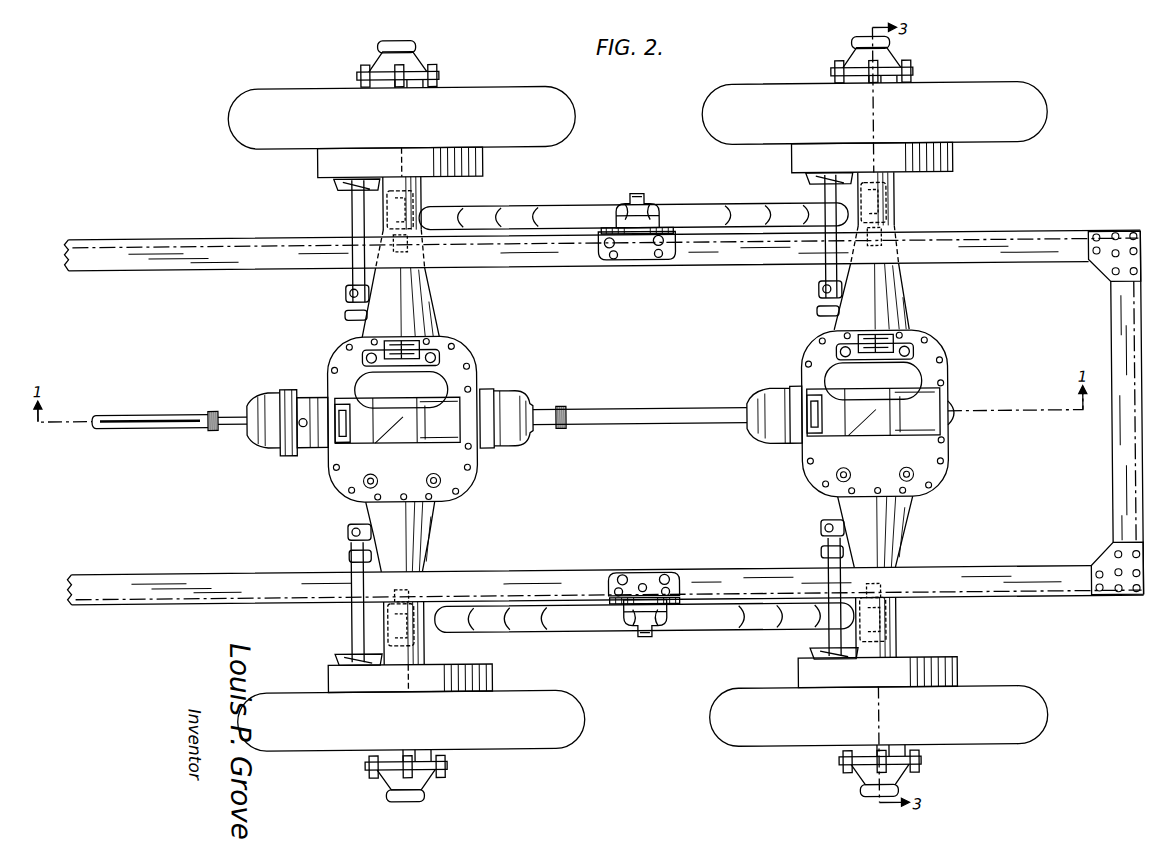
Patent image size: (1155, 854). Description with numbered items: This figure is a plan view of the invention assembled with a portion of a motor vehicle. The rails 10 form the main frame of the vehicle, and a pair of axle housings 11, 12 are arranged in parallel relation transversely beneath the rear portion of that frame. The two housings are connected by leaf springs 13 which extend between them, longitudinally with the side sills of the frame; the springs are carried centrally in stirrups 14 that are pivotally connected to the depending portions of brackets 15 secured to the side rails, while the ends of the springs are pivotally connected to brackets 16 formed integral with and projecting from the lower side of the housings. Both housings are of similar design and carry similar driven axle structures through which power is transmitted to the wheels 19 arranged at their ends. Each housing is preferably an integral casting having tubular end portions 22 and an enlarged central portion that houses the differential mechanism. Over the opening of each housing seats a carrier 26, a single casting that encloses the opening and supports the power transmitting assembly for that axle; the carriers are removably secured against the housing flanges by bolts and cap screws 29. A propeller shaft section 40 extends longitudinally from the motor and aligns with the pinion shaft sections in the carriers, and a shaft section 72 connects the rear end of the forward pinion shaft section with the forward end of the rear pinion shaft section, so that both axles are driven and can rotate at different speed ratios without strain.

The rails 10 is at (1023, 253).
The axle housing 11 is at (913, 517).
The axle housing 12 is at (437, 315).
The leaf springs 13 is at (705, 213).
The stirrups 14 is at (650, 197).
The brackets 15 is at (677, 234).
The brackets 16 is at (422, 202).
The wheels 19 is at (641, 419).
The tubular end portions 22 is at (666, 398).
The carriers 26 is at (638, 415).
The bolts and cap screws 29 is at (343, 350).
The propeller shaft section 40 is at (192, 417).
The shaft section 72 is at (597, 417).